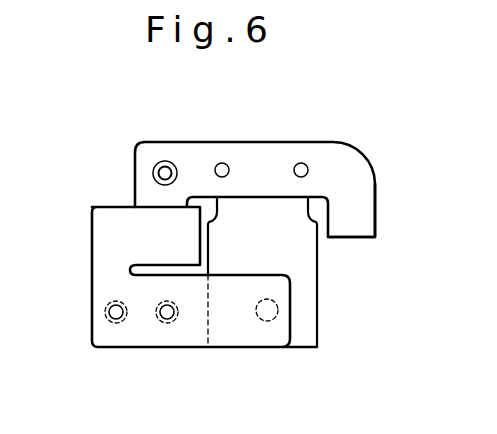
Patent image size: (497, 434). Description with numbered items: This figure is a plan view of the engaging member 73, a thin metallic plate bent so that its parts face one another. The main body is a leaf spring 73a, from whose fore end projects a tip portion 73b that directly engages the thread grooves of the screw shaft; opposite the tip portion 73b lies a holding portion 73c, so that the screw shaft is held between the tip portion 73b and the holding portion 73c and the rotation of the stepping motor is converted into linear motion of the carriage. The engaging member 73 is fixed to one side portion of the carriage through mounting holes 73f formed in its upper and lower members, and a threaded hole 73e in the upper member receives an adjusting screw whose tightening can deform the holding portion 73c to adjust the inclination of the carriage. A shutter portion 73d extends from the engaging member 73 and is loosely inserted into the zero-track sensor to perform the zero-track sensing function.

The engaging member 73 is at (255, 142).
The leaf spring 73a is at (318, 332).
The tip portion 73b is at (267, 321).
The holding portion 73c is at (226, 334).
The shutter portion 73d is at (353, 238).
The threaded hole 73e is at (168, 323).
The mounting holes 73f is at (154, 169).